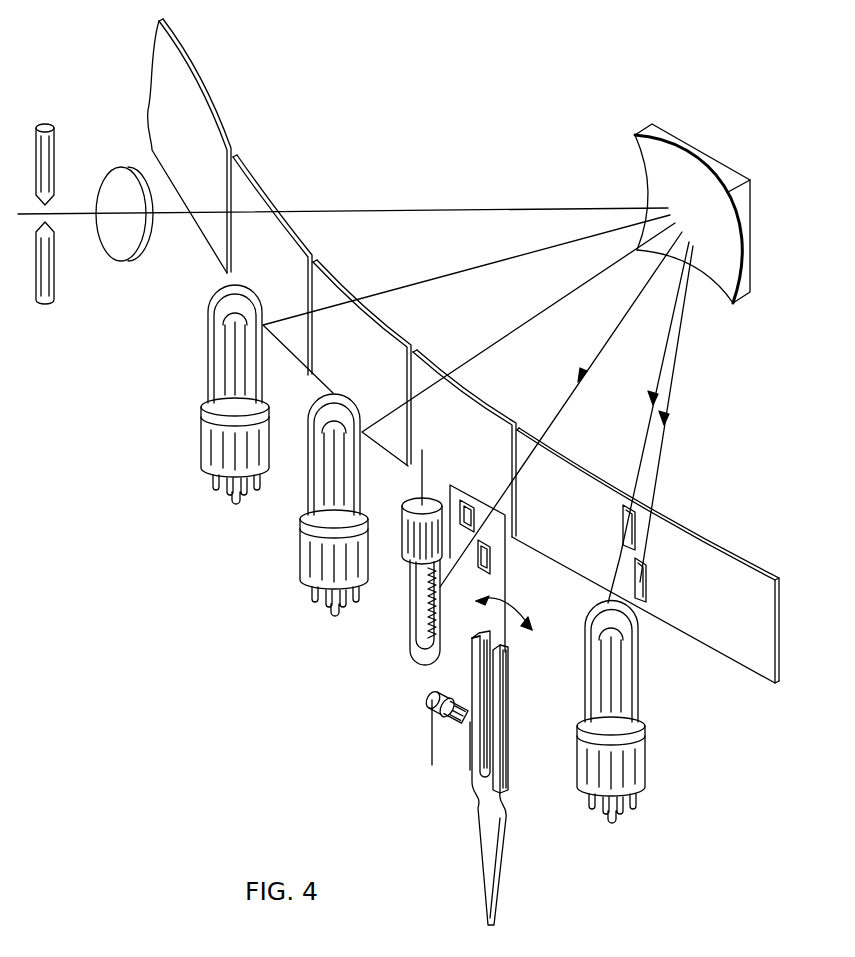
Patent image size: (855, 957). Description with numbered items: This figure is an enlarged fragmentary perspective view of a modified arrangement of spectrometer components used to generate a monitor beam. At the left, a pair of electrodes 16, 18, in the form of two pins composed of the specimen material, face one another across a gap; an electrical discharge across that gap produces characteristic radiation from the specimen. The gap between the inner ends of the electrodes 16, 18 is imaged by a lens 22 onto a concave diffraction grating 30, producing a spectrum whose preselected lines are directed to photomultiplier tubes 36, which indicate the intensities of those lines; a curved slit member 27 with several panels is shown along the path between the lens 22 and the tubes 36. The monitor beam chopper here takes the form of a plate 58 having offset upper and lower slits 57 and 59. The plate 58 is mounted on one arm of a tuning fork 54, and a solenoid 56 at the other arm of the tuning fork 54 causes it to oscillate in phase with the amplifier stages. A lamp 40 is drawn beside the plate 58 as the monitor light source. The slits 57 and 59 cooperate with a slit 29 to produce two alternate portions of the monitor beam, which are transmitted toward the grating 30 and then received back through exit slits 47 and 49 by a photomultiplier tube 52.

The electrode 16 is at (50, 152).
The electrode 18 is at (54, 292).
The lens 22 is at (125, 175).
The curved slit plate 27 is at (240, 148).
The slit 29 is at (522, 430).
The concave diffraction grating 30 is at (693, 191).
The photomultiplier tube 36 is at (210, 347).
The lamp 40 is at (410, 625).
The exit slit 47 is at (623, 521).
The exit slit 49 is at (648, 585).
The photomultiplier tube 52 is at (630, 683).
The tuning fork 54 is at (500, 870).
The solenoid 56 is at (430, 712).
The upper slit 57 is at (470, 508).
The plate 58 is at (497, 549).
The lower slit 59 is at (480, 560).